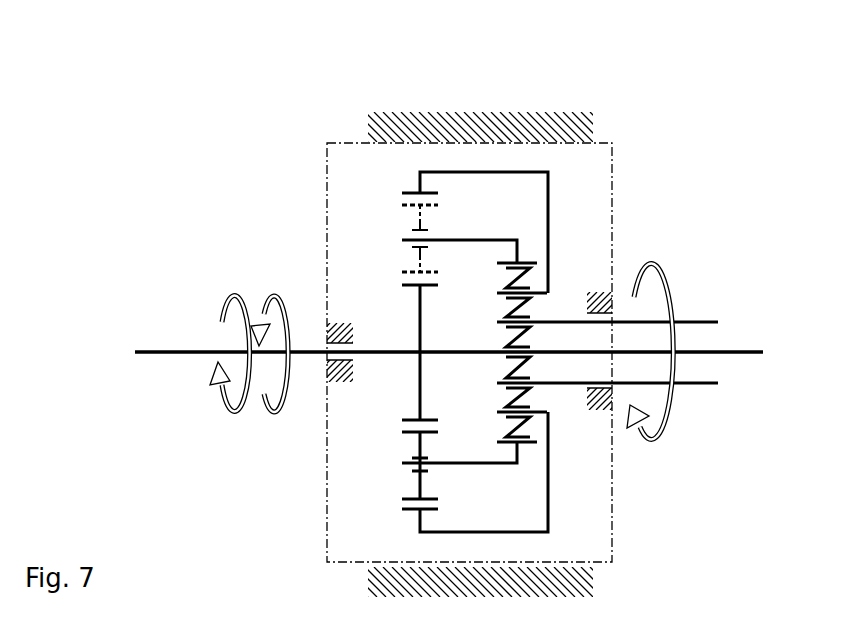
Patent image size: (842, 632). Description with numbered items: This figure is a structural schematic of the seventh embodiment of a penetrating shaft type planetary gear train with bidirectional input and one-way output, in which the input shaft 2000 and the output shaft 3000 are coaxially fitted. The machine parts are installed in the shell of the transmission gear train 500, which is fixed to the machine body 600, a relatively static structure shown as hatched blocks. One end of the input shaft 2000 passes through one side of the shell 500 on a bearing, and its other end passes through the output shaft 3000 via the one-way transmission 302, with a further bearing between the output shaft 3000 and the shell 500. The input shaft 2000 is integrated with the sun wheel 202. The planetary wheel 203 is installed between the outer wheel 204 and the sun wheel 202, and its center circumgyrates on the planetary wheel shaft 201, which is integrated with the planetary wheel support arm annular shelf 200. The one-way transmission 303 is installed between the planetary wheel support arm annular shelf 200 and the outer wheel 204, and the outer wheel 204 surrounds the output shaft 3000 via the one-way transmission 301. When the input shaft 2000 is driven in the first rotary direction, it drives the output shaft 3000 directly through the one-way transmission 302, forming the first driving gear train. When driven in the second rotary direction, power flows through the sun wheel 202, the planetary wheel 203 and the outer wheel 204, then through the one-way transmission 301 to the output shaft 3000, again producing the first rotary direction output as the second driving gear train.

The machine body 600 is at (483, 133).
The shell of the transmission gear train 500 is at (327, 230).
The input shaft 2000 is at (198, 350).
The output shaft 3000 is at (694, 322).
The planetary wheel support arm annular shelf 200 is at (519, 255).
The planetary wheel shaft 201 is at (460, 465).
The sun wheel 202 is at (410, 285).
The planetary wheel 203 is at (417, 218).
The outer wheel 204 is at (402, 512).
The one-way transmission 301 is at (502, 398).
The one-way transmission 302 is at (503, 342).
The one-way transmission 303 is at (527, 275).